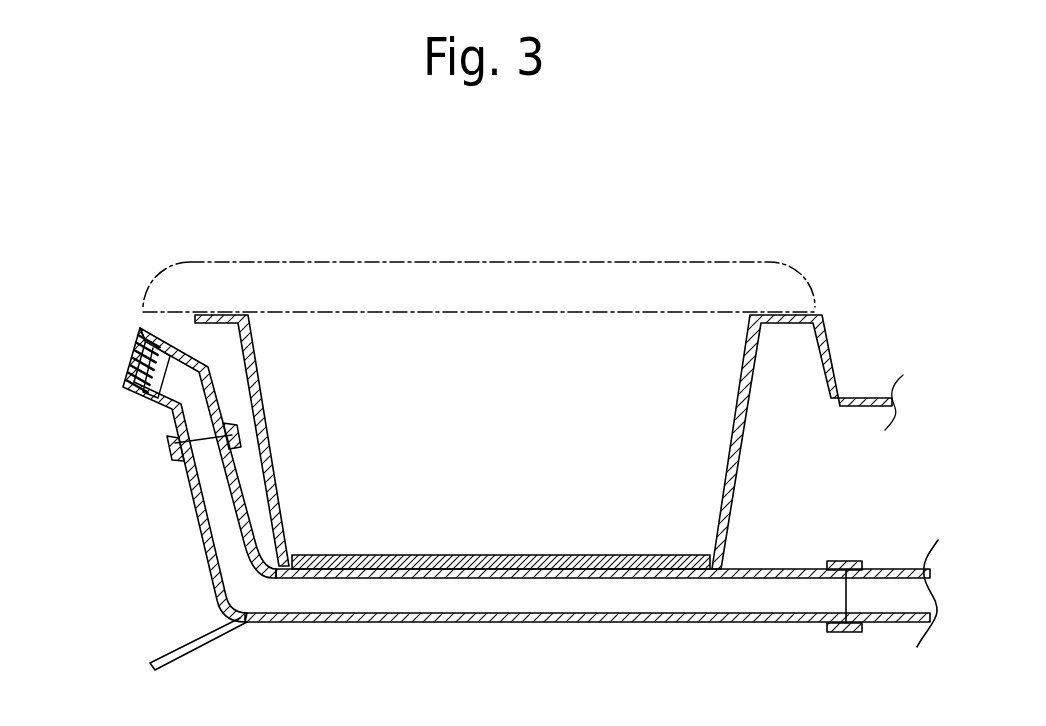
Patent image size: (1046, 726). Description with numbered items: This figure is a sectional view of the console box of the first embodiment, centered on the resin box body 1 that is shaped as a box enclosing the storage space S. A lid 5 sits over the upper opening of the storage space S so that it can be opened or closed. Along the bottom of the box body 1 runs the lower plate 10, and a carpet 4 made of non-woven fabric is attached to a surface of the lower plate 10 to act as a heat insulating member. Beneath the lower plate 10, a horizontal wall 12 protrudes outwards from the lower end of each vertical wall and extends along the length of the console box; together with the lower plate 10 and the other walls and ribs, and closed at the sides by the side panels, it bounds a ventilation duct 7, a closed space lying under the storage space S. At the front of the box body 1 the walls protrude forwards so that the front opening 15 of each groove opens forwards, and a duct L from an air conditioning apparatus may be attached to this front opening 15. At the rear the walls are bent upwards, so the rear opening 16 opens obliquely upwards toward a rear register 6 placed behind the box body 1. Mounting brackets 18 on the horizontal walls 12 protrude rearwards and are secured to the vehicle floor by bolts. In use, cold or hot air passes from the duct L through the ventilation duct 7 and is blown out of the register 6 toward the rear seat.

The box body 1 is at (733, 438).
The carpet 4 is at (465, 555).
The lid 5 is at (512, 272).
The rear register 6 is at (155, 410).
The ventilation duct 7 is at (545, 608).
The lower plate 10 is at (600, 572).
The horizontal wall 12 is at (402, 623).
The front opening 15 is at (842, 597).
The rear opening 16 is at (202, 445).
The mounting bracket 18 is at (213, 630).
The storage space S is at (517, 423).
The duct L is at (893, 571).